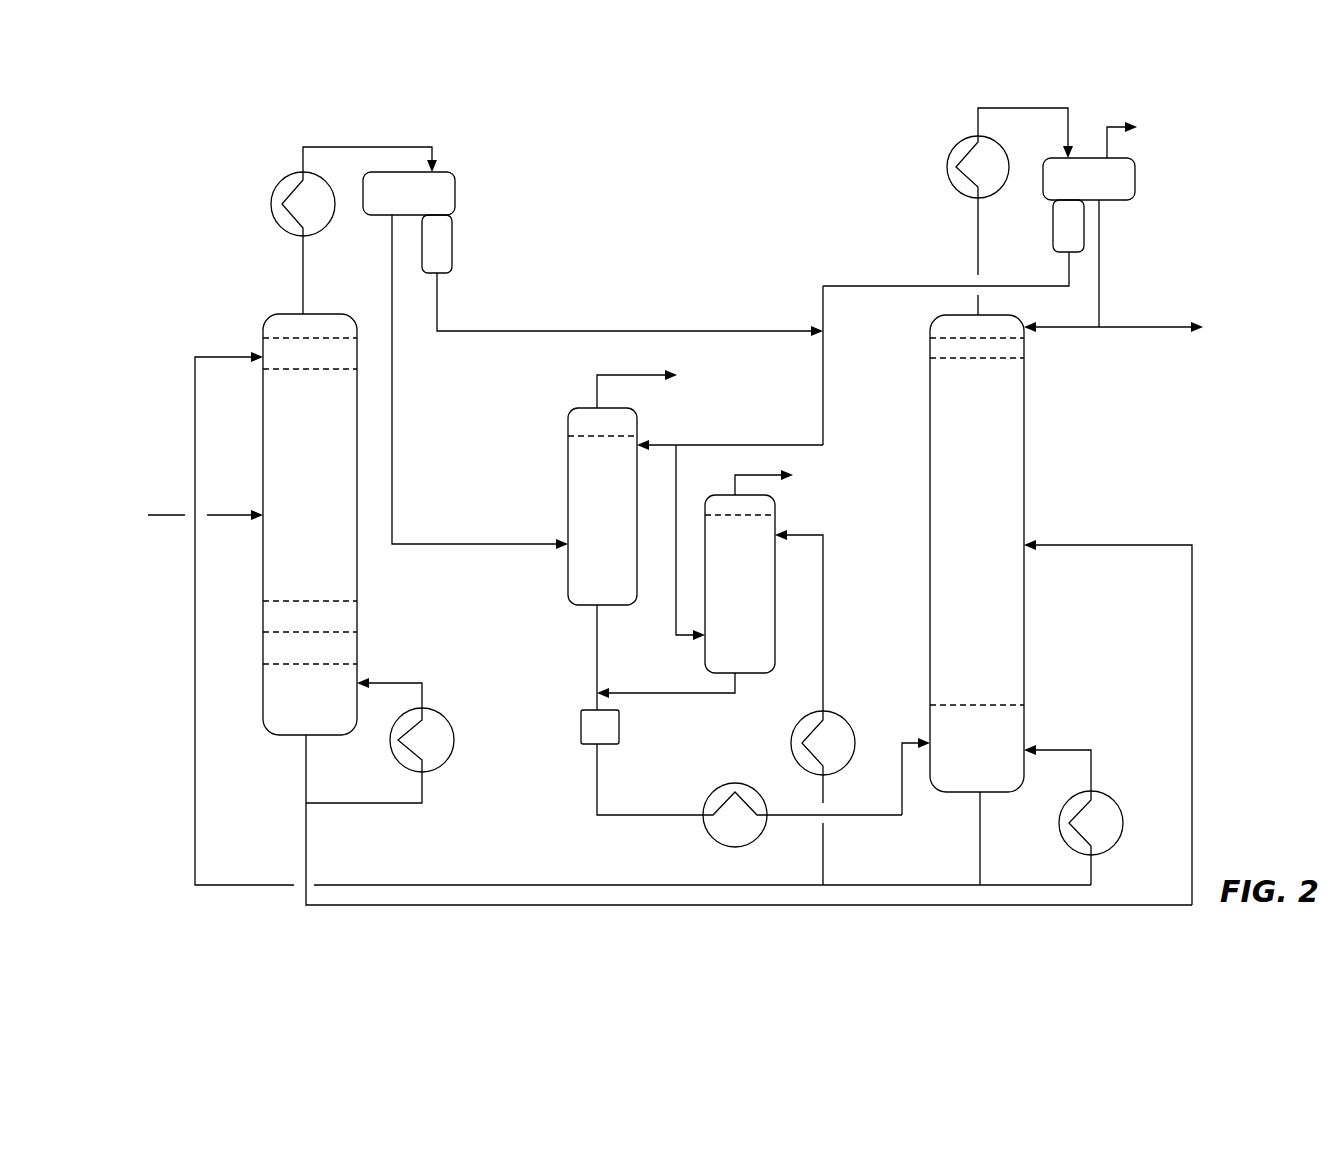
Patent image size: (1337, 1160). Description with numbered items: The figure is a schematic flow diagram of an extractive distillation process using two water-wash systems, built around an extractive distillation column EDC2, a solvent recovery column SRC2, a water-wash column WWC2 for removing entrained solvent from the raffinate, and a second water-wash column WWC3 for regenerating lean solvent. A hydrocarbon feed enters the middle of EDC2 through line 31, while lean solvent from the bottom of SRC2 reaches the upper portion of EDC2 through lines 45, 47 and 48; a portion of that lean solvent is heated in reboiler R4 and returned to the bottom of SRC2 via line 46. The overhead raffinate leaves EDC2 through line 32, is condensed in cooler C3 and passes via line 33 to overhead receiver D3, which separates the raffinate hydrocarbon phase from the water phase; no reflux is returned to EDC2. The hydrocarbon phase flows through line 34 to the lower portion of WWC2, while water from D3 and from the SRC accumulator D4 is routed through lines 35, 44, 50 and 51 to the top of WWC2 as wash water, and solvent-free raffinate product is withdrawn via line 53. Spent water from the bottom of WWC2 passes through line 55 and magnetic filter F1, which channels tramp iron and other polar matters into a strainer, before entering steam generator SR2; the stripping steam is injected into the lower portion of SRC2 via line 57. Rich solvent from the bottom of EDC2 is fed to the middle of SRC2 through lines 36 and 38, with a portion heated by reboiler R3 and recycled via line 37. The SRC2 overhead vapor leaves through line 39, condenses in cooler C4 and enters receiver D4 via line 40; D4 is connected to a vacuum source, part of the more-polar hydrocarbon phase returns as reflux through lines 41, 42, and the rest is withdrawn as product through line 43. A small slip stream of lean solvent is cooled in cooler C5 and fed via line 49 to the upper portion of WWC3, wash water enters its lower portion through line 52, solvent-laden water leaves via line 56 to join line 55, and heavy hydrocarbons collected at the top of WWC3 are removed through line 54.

The hydrocarbon feed line 31 is at (205, 504).
The overhead raffinate line 32 is at (322, 275).
The condensed raffinate transfer line 33 is at (370, 147).
The raffinate hydrocarbon phase line 34 is at (467, 382).
The water phase line 35 is at (630, 304).
The rich solvent line 36 is at (732, 820).
The reboiler recycle line 37 is at (389, 680).
The rich solvent feed line 38 is at (1108, 709).
The SRC2 overhead vapor line 39 is at (964, 256).
The condensed overhead line 40 is at (1025, 133).
The reflux line 41 is at (1117, 263).
The reflux line 42 is at (1061, 315).
The more-polar hydrocarbon product line 43 is at (1151, 315).
The water phase line 44 is at (946, 269).
The lean solvent line 45 is at (997, 838).
The reboiler recycle line 46 is at (1074, 768).
The lean solvent recycle line 47 is at (702, 830).
The lean solvent feed line 48 is at (244, 606).
The lean solvent slip stream line 49 is at (814, 620).
The wash water line 50 is at (839, 365).
The wash water feed line 51 is at (730, 435).
The WWC3 wash water line 52 is at (677, 542).
The solvent-free raffinate product line 53 is at (652, 386).
The heavy hydrocarbon withdrawal line 54 is at (780, 479).
The spent water line 55 is at (614, 657).
The solvent-laden water line 56 is at (666, 699).
The stripping steam line 57 is at (917, 776).
The cooler C3 is at (293, 204).
The cooler C4 is at (961, 167).
The cooler C5 is at (806, 743).
The overhead receiver D3 is at (409, 222).
The overhead receiver D4 is at (1135, 169).
The extractive distillation column EDC2 is at (310, 524).
The solvent recovery column SRC2 is at (977, 553).
The water-wash column WWC2 is at (607, 506).
The water-wash column WWC3 is at (744, 584).
The reboiler R3 is at (425, 753).
The reboiler R4 is at (1100, 838).
The steam generator SR2 is at (749, 809).
The magnetic filter F1 is at (600, 727).